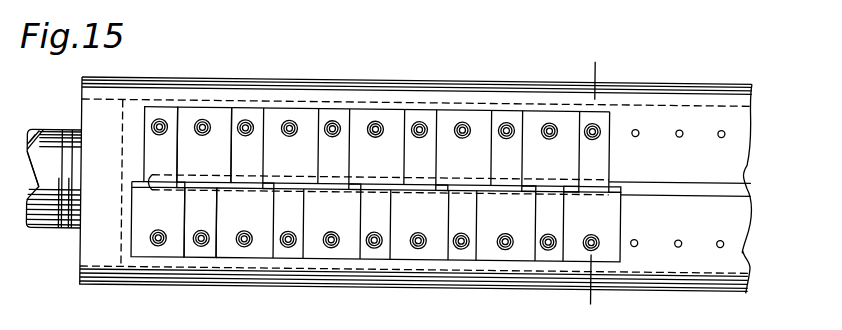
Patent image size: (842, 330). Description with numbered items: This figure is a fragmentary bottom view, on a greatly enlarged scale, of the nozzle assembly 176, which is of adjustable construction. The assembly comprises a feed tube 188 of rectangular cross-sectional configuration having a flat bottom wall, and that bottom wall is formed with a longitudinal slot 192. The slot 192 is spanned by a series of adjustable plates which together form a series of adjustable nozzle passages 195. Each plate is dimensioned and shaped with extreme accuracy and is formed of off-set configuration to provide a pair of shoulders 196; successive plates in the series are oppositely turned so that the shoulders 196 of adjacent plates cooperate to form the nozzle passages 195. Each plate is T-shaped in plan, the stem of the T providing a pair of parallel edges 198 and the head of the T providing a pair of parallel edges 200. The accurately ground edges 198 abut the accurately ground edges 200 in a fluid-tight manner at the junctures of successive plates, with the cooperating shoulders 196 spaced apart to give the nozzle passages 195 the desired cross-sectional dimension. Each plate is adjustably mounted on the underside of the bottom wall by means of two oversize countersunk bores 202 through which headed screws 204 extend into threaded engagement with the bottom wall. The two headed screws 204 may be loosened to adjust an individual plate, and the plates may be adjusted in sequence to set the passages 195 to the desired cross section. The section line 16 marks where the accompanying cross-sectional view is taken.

The nozzle assembly 176 is at (432, 79).
The feed tube 188 is at (347, 80).
The longitudinal slot 192 is at (648, 176).
The nozzle passage 195 is at (183, 180).
The shoulder 196 is at (182, 192).
The parallel edge of the T stem 198 is at (178, 140).
The parallel edge of the T head 200 is at (232, 139).
The oversize countersunk bore 202 is at (463, 245).
The headed screw 204 is at (162, 119).
The section line 16— 16 is at (597, 64).